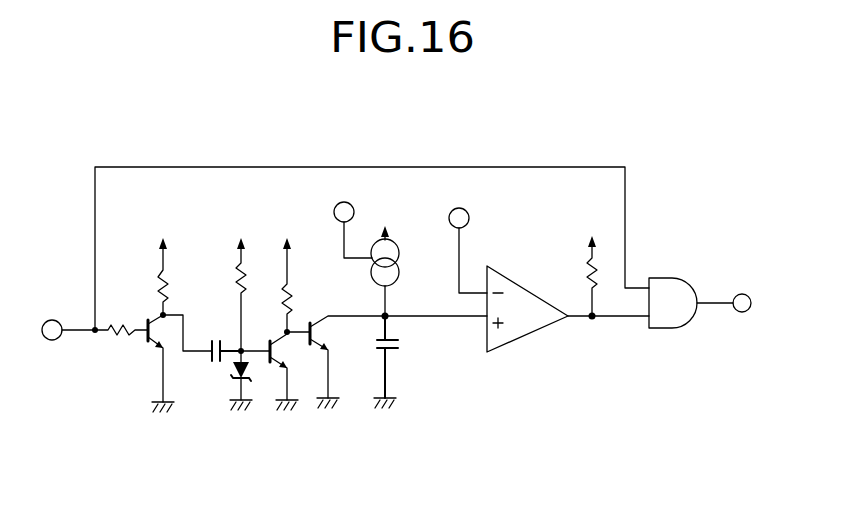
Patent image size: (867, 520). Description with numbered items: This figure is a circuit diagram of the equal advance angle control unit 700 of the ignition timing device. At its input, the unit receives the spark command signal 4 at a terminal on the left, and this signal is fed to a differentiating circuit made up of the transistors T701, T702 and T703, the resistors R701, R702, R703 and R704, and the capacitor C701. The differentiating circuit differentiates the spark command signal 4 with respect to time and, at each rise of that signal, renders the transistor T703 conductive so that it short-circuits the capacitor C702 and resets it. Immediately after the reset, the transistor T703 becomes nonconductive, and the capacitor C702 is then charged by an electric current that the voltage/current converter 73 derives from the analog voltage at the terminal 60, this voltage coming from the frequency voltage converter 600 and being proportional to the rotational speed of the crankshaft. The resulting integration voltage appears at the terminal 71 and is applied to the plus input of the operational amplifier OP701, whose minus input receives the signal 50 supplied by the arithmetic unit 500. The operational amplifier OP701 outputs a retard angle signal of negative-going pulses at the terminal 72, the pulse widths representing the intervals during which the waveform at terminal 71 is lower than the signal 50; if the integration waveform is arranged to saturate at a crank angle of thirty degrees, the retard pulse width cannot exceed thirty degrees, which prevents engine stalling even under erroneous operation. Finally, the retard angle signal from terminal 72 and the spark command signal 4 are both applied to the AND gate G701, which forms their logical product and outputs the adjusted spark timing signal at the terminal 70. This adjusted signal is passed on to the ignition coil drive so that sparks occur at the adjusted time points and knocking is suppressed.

The equal advance angle control unit 700 is at (224, 152).
The spark command signal 4 is at (53, 340).
The terminal 60 is at (353, 206).
The frequency voltage converter 600 is at (341, 203).
The signal 50 is at (468, 210).
The arithmetic unit 500 is at (468, 209).
The voltage/current converter 73 is at (399, 262).
The terminal (signal advance integration waveform) 71 is at (388, 320).
The terminal (retard angle signal) 72 is at (595, 319).
The terminal (adjusted spark timing signal) 70 is at (744, 312).
The resistor R701 is at (120, 324).
The resistor R702 is at (160, 279).
The resistor R703 is at (238, 280).
The resistor R704 is at (290, 302).
The transistor T701 is at (152, 346).
The transistor T702 is at (293, 372).
The transistor T703 is at (324, 335).
The capacitor C701 is at (212, 362).
The capacitor C702 is at (398, 349).
The operational amplifier OP701 is at (528, 341).
The AND gate G701 is at (690, 327).